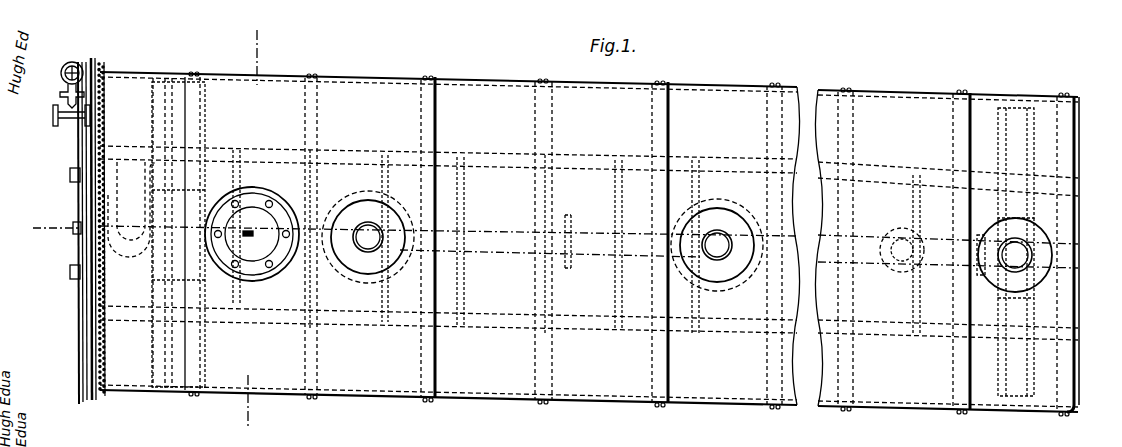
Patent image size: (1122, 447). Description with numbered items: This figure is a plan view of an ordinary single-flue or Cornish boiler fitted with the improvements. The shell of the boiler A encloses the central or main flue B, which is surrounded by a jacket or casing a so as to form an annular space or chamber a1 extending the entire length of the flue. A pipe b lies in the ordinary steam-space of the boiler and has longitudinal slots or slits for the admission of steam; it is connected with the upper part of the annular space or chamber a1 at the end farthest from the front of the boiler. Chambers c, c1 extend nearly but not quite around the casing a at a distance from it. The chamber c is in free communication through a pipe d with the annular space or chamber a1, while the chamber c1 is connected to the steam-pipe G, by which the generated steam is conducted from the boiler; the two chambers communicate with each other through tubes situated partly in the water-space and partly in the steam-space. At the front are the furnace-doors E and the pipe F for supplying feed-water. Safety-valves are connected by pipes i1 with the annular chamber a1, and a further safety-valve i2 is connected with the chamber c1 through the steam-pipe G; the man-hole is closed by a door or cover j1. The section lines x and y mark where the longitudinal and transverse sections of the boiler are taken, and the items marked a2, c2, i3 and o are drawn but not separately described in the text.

The shell of the boiler A is at (589, 242).
The central or main flue B is at (534, 284).
The jacket or casing a is at (448, 150).
The annular space or chamber a1 is at (909, 167).
The lower longitudinal seam a2 is at (589, 331).
The pipe b is at (589, 247).
The chamber c is at (178, 234).
The chamber c1 is at (1016, 163).
The lower reinforcing plate c2 is at (1016, 307).
The pipe d is at (131, 209).
The furnace-doors E is at (80, 231).
The feed-water pipe F is at (67, 94).
The steam-pipe G is at (1014, 256).
The man-hole door or cover j1 is at (252, 234).
The pipes i1 is at (368, 237).
The safety-valve i2 is at (717, 245).
The third opening i3 is at (902, 250).
The outlet axis o is at (1060, 256).
The section line x x is at (47, 228).
The section line y y is at (251, 229).